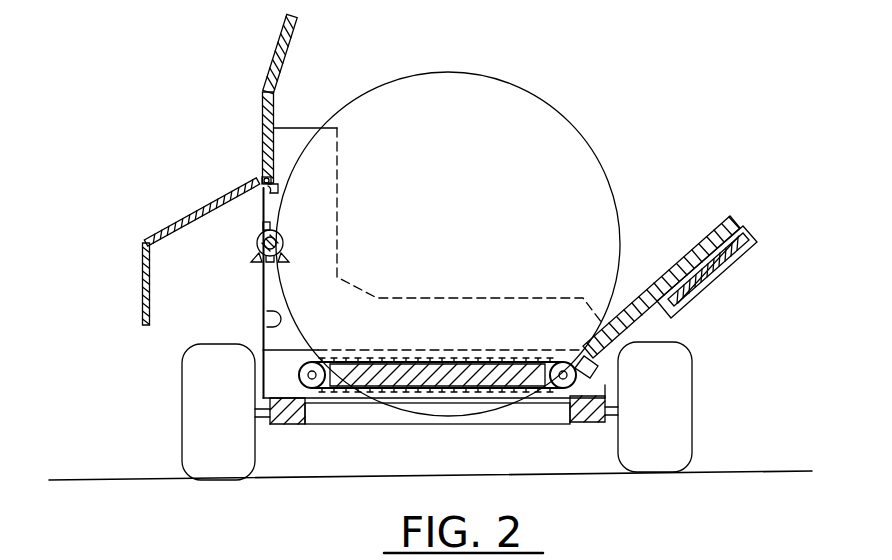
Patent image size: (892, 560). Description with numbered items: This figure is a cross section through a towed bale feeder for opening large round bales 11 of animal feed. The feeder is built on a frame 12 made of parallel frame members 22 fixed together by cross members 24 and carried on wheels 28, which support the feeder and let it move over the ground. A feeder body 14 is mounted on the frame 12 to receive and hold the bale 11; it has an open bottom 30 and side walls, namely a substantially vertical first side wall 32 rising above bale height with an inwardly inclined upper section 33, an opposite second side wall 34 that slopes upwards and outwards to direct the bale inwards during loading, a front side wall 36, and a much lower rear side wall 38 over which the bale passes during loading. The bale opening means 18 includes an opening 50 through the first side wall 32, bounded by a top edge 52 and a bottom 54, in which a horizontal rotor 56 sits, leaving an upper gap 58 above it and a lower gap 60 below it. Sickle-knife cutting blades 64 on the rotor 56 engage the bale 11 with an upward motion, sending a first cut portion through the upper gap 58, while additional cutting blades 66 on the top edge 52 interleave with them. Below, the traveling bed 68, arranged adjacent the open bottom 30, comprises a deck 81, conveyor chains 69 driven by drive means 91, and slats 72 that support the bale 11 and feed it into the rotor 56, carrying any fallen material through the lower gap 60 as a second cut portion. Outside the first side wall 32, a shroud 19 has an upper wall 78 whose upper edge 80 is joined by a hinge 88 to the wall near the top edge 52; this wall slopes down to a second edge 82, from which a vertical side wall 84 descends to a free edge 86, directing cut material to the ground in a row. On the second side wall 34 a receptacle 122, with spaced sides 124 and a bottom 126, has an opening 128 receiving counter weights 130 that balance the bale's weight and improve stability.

The bale 11 is at (548, 118).
The frame 12 is at (487, 433).
The feeder body 14 is at (243, 70).
The bale opening means 18 is at (242, 285).
The shroud 19 is at (151, 270).
The frame members 22 is at (288, 427).
The cross members 24 is at (322, 417).
The wheels 28 is at (210, 437).
The open bottom 30 is at (517, 395).
The first side wall 32 is at (263, 105).
The inwardly inclined upper section 33 is at (290, 22).
The second side wall 34 is at (723, 230).
The front side wall 36 is at (284, 559).
The rear side wall 38 is at (290, 143).
The opening 50 is at (243, 270).
The top edge 52 is at (272, 184).
The bottom 54 is at (280, 350).
The rotor 56 is at (283, 243).
The upper gap 58 is at (266, 208).
The lower gap 60 is at (263, 309).
The cutting blades 64 is at (288, 258).
The additional cutting blades 66 is at (278, 190).
The traveling bed 68 is at (407, 403).
The conveyor chains 69 is at (472, 357).
The slats 72 is at (383, 362).
The upper wall 78 is at (193, 213).
The upper edge 80 is at (262, 182).
The deck 81 is at (350, 380).
The second edge 82 is at (143, 242).
The side wall 84 is at (142, 290).
The free edge 86 is at (142, 325).
The hinge 88 is at (263, 179).
The drive means 91 is at (318, 355).
The receptacle 122 is at (742, 259).
The sides 124 is at (688, 272).
The bottom 126 is at (697, 307).
The opening 128 is at (741, 240).
The counter weights 130 is at (723, 278).